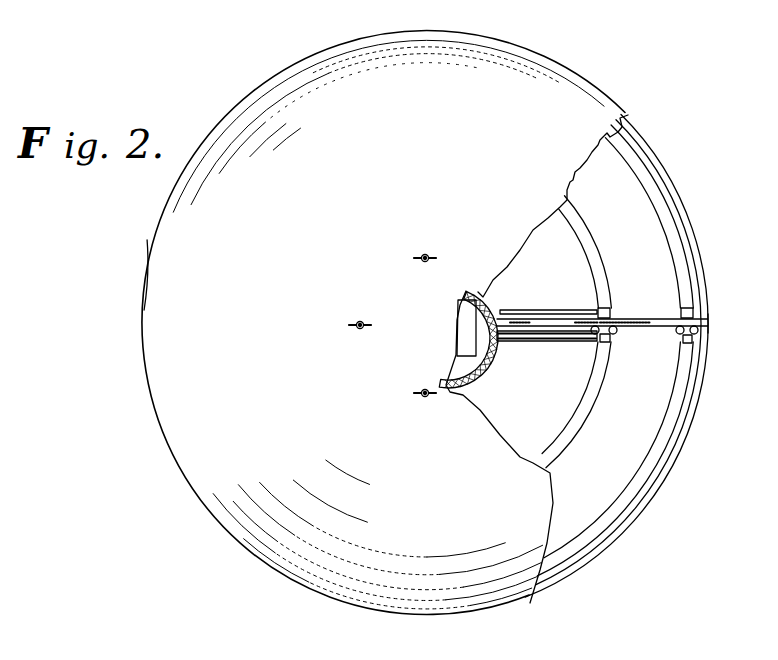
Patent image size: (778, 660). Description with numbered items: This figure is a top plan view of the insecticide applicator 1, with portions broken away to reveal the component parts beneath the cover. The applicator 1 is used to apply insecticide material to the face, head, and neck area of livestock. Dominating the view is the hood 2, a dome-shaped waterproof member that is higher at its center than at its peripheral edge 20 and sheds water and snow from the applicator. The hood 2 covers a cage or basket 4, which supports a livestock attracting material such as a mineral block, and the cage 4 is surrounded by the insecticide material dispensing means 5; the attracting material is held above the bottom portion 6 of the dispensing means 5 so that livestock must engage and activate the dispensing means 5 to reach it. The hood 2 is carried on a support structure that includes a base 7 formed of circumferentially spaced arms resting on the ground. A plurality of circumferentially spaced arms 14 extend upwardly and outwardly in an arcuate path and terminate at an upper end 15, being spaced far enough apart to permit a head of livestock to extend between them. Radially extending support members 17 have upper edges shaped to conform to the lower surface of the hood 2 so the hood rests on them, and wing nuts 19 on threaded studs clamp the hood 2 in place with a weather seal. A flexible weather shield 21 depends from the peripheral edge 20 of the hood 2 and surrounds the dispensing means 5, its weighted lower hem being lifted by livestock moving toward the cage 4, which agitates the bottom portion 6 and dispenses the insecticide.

The insecticide applicator 1 is at (226, 75).
The hood 2 is at (311, 103).
The cage or basket 4 is at (473, 362).
The insecticide material dispensing means 5 is at (694, 368).
The bottom portion 6 is at (655, 291).
The base 7 is at (547, 306).
The arms 14 is at (484, 330).
The upper end 15 is at (498, 313).
The support members 17 is at (663, 337).
The wing nuts 19 is at (352, 325).
The peripheral edge 20 is at (150, 243).
The weather shield 21 is at (700, 239).